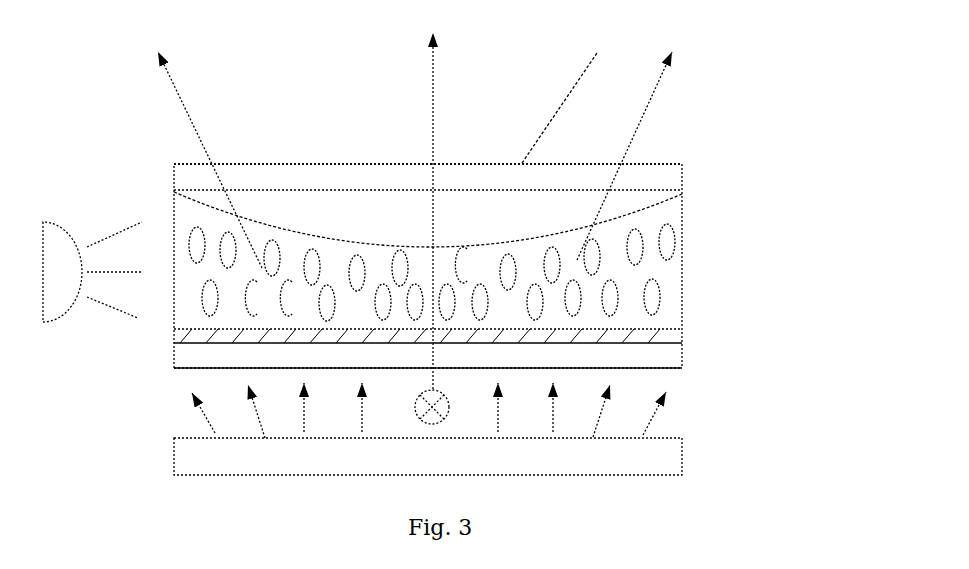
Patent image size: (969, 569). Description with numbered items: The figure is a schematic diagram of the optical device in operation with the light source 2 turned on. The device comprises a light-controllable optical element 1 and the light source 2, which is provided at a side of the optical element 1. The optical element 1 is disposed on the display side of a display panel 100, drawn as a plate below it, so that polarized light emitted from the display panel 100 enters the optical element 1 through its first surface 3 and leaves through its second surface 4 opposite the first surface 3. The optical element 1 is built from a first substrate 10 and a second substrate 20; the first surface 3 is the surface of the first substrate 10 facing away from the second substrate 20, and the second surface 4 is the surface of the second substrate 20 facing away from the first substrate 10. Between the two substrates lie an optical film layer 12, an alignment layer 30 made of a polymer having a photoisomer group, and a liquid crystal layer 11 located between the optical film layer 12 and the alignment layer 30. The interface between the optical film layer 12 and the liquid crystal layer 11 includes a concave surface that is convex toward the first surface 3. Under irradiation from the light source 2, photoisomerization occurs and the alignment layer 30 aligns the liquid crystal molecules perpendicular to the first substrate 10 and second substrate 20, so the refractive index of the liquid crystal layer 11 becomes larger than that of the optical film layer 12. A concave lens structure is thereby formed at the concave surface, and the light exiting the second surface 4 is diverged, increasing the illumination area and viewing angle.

The light-controllable optical element 1 is at (684, 150).
The light source 2 is at (61, 268).
The first surface 3 is at (645, 370).
The second surface 4 is at (568, 91).
The first substrate 10 is at (630, 355).
The liquid crystal layer 11 is at (650, 297).
The optical film layer 12 is at (643, 207).
The second substrate 20 is at (637, 178).
The alignment layer 30 is at (628, 337).
The display panel 100 is at (632, 457).